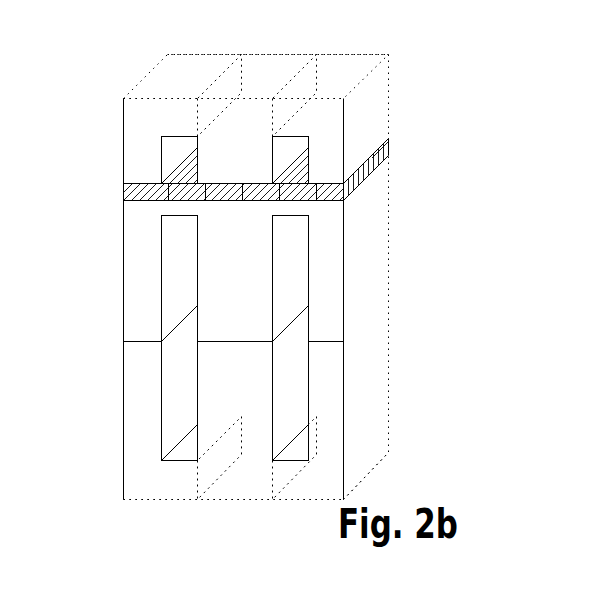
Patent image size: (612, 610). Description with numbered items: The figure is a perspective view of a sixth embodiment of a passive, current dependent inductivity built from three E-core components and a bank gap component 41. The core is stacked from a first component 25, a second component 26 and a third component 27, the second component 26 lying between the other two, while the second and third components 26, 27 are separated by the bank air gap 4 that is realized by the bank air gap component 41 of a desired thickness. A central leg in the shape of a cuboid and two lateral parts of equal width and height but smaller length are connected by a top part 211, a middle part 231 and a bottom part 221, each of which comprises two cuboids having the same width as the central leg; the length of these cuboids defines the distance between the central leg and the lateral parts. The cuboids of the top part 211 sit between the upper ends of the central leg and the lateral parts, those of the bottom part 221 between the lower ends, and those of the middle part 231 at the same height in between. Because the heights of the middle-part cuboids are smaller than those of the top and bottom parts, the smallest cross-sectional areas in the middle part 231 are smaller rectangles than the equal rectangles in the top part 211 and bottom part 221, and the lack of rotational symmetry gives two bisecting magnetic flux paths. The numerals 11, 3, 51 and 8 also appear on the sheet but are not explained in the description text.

The mould insert 11 is at (222, 40).
The mould 3 is at (278, 27).
The top part 211 is at (275, 111).
The middle part 231 is at (263, 213).
The openings 51 is at (172, 233).
The third component 27 is at (362, 113).
The bank air gap 4 is at (368, 166).
The bank air gap component 41 is at (402, 178).
The second component 26 is at (377, 245).
The ribs 8 is at (147, 248).
The first component 25 is at (376, 413).
The bottom part 221 is at (280, 477).